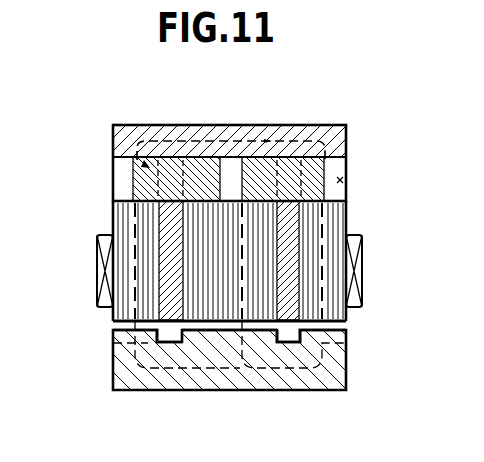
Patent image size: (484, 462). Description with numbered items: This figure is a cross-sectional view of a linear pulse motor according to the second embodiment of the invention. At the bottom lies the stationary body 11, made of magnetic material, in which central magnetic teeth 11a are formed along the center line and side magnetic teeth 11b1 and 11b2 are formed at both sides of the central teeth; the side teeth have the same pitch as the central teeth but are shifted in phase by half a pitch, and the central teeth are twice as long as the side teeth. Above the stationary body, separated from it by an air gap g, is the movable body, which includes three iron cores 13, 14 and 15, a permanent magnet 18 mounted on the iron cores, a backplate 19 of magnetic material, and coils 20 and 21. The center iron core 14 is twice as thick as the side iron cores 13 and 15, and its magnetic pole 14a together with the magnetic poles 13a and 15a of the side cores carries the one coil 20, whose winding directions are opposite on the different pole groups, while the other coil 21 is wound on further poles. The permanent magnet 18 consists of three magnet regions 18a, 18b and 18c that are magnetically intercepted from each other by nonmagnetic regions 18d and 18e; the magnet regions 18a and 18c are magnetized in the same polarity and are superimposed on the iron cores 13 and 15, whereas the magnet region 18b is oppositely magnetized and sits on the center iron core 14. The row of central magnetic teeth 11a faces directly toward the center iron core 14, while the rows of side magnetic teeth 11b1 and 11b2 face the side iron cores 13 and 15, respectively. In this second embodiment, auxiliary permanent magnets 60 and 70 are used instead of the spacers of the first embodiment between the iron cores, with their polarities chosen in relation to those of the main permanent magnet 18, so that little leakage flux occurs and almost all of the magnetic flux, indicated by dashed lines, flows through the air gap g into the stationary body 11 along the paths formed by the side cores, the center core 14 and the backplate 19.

The stationary body 11 is at (127, 372).
The central magnetic teeth 11a is at (203, 341).
The side magnetic teeth 11b1 is at (304, 341).
The side magnetic teeth 11b2 is at (150, 343).
The iron core 13 is at (330, 218).
The magnetic pole 13a is at (347, 319).
The center iron core 14 is at (197, 217).
The magnetic pole 14a is at (254, 341).
The iron core 15 is at (120, 227).
The magnetic pole 15a is at (115, 320).
The permanent magnet 18 is at (113, 127).
The magnet region 18a is at (347, 175).
The magnet region 18b is at (238, 165).
The magnet region 18c is at (113, 173).
The nonmagnetic region 18d is at (282, 168).
The nonmagnetic region 18e is at (173, 167).
The backplate 19 is at (322, 133).
The coil 20 is at (354, 266).
The coil 21 is at (105, 271).
The auxiliary permanent magnet 60 is at (287, 296).
The auxiliary permanent magnet 70 is at (165, 277).
The air gap g is at (339, 326).